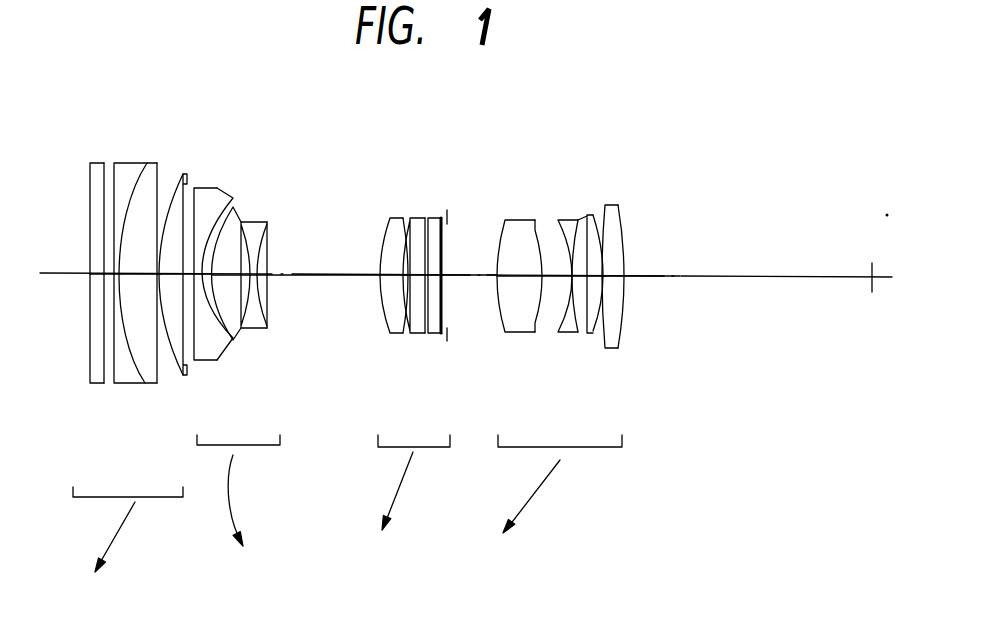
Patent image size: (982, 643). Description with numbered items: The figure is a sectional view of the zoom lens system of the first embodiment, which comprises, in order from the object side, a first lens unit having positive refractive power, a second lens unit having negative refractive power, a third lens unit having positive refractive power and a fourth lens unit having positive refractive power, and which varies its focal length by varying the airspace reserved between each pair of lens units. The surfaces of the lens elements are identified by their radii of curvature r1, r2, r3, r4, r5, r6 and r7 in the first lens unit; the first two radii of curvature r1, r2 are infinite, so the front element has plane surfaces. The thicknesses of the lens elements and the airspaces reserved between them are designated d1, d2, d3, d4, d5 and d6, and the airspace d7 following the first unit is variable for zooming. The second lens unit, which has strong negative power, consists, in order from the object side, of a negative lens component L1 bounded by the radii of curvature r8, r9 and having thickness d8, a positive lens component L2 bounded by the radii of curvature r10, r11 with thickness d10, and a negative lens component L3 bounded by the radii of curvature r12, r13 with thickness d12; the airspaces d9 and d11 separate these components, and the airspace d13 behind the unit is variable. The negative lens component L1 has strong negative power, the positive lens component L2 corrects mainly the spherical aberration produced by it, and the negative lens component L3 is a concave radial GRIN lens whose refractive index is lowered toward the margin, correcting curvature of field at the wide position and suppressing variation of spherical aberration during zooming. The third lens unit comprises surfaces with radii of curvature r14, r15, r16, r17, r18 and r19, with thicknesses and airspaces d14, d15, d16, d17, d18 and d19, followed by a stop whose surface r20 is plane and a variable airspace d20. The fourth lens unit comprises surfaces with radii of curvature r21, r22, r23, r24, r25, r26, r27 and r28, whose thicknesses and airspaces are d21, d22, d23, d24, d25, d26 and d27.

The radius of curvature of first surface r1 is at (90, 185).
The radius of curvature of second surface r2 is at (106, 180).
The radius of curvature of third surface r3 is at (114, 183).
The radius of curvature of fourth surface r4 is at (146, 186).
The radius of curvature of fifth surface r5 is at (157, 188).
The radius of curvature of sixth surface r6 is at (170, 190).
The radius of curvature of seventh surface r7 is at (187, 174).
The radius of curvature of eighth surface r8 is at (198, 189).
The radius of curvature of ninth surface r9 is at (233, 200).
The radius of curvature of tenth surface r10 is at (234, 207).
The radius of curvature of eleventh surface r11 is at (248, 221).
The radius of curvature of twelfth surface r12 is at (258, 222).
The radius of curvature of thirteenth surface r13 is at (270, 236).
The radius of curvature of fourteenth surface r14 is at (388, 218).
The radius of curvature of fifteenth surface r15 is at (401, 217).
The radius of curvature of sixteenth surface r16 is at (410, 217).
The radius of curvature of seventeenth surface r17 is at (423, 217).
The radius of curvature of eighteenth surface r18 is at (431, 217).
The radius of curvature of nineteenth surface r19 is at (443, 216).
The stop r20 is at (448, 220).
The radius of curvature of twenty-first surface r21 is at (505, 222).
The radius of curvature of twenty-second surface r22 is at (535, 222).
The radius of curvature of twenty-third surface r23 is at (558, 223).
The radius of curvature of twenty-fourth surface r24 is at (575, 220).
The radius of curvature of twenty-fifth surface r25 is at (587, 216).
The radius of curvature of twenty-sixth surface r26 is at (600, 218).
The radius of curvature of twenty-seventh surface r27 is at (615, 205).
The radius of curvature of twenty-eighth surface r28 is at (620, 218).
The thickness of first lens element d1 is at (102, 275).
The airspace behind first lens element d2 is at (107, 273).
The thickness of second lens element d3 is at (115, 278).
The thickness of third lens element d4 is at (124, 280).
The airspace behind third lens element d5 is at (157, 270).
The thickness of fourth lens element d6 is at (158, 285).
The variable airspace between first and second lens units d7 is at (188, 295).
The thickness of negative lens component L1 d8 is at (197, 300).
The airspace between L1 and L2 d9 is at (220, 295).
The thickness of positive lens component L2 d10 is at (248, 280).
The airspace between L2 and L3 d11 is at (255, 274).
The thickness of GRIN lens component L3 d12 is at (257, 278).
The variable airspace between second and third lens units d13 is at (320, 277).
The thickness of first lens element of third unit d14 is at (388, 280).
The airspace in third lens unit d15 is at (398, 281).
The thickness of second lens element of third unit d16 is at (413, 281).
The airspace in third lens unit d17 is at (385, 273).
The thickness of third lens element of third unit d18 is at (437, 281).
The airspace before stop d19 is at (441, 277).
The variable airspace between stop and fourth lens unit d20 is at (460, 283).
The thickness of first lens element of fourth unit d21 is at (510, 281).
The airspace in fourth lens unit d22 is at (547, 281).
The thickness of second lens element of fourth unit d23 is at (573, 281).
The airspace in fourth lens unit d24 is at (582, 277).
The thickness of third lens element of fourth unit d25 is at (597, 281).
The airspace in fourth lens unit d26 is at (612, 282).
The thickness of last lens element d27 is at (605, 281).
The negative lens component L1 is at (214, 270).
The positive lens component L2 is at (235, 265).
The negative lens component L3 is at (272, 259).